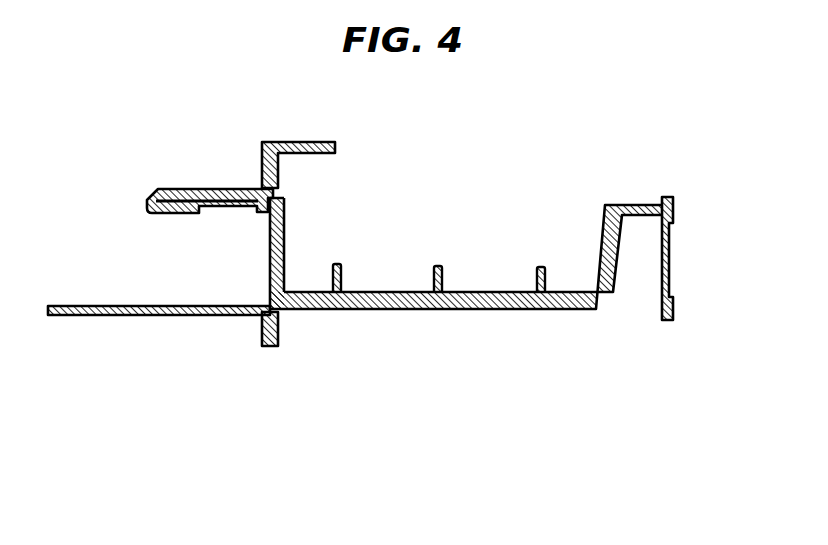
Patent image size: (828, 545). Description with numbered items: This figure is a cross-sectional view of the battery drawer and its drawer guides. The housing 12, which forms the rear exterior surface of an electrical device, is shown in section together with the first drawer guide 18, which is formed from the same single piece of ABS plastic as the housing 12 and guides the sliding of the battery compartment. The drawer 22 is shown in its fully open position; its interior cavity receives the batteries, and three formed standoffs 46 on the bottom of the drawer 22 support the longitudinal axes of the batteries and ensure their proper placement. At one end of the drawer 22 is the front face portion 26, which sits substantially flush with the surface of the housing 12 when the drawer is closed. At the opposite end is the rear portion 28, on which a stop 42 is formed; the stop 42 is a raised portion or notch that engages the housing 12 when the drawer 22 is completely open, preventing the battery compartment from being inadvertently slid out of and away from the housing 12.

The housing 12 is at (297, 141).
The stop 42 is at (166, 189).
The rear portion 28 is at (282, 241).
The drawer 22 is at (469, 211).
The standoffs 46 is at (432, 281).
The front face portion 26 is at (672, 248).
The first drawer guide 18 is at (155, 318).